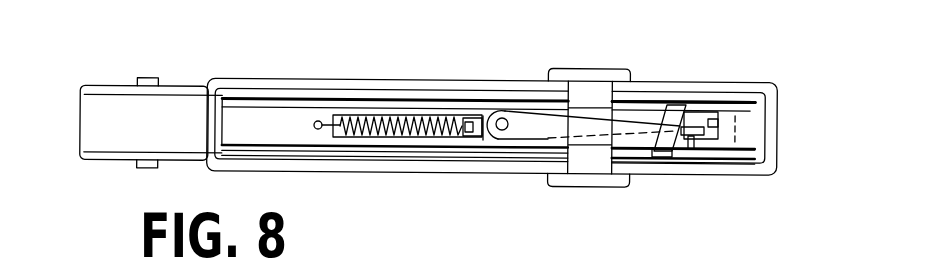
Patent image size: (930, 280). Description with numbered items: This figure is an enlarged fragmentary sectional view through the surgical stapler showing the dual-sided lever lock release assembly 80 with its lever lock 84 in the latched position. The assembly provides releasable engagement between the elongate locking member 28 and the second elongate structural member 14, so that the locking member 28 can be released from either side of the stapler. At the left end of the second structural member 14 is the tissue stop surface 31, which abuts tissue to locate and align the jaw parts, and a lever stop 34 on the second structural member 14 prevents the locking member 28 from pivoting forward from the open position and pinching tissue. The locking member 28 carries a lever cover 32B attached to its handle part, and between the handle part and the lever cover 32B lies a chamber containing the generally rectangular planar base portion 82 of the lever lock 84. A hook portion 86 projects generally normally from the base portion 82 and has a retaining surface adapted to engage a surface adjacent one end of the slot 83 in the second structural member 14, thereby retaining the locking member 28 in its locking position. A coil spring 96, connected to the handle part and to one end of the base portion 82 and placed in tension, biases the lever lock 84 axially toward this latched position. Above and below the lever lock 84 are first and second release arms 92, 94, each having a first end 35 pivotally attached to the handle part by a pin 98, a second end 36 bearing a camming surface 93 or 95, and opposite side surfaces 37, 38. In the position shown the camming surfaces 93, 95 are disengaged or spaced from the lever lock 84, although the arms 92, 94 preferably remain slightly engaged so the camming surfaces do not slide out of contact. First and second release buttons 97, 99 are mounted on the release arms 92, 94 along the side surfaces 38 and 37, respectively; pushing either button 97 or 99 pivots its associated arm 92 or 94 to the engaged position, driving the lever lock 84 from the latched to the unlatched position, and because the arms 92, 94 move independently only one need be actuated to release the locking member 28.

The second elongate structural member 14 is at (262, 95).
The elongate locking member 28 is at (375, 85).
The tissue stop surface 31 is at (79, 103).
The lever cover 32B is at (422, 81).
The lever stop 34 is at (147, 78).
The first end of release arm 35 is at (493, 104).
The second end of release arm 36 is at (678, 110).
The second side surface of release arm 37 is at (657, 158).
The first side surface of release arm 38 is at (651, 106).
The dual-sided lever lock release assembly 80 is at (583, 197).
The base portion 82 is at (472, 140).
The slot 83 is at (716, 119).
The lever lock 84 is at (459, 134).
The hook portion 86 is at (694, 136).
The first release arm 92 is at (536, 110).
The camming surface 93 is at (712, 117).
The second release arm 94 is at (546, 141).
The camming surface 95 is at (692, 150).
The coil spring 96 is at (352, 113).
The first release button 97 is at (598, 69).
The pin 98 is at (503, 117).
The second release button 99 is at (606, 184).